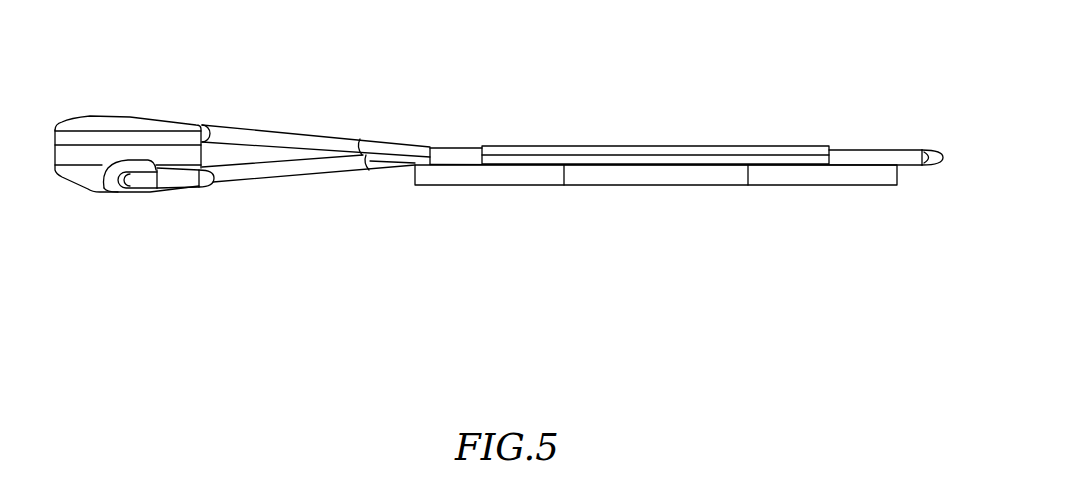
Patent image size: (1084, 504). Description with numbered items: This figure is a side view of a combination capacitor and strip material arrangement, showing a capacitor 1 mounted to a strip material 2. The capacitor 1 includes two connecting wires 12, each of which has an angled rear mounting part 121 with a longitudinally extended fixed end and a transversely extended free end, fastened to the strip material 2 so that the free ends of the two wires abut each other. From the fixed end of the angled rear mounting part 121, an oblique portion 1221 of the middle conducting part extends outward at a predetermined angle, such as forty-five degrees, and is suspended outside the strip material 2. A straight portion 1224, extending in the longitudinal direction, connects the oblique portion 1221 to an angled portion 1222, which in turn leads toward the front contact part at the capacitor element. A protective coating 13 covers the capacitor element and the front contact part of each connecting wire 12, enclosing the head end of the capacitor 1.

The capacitor 1 is at (116, 96).
The connecting wire 12 is at (277, 112).
The protective coating 13 is at (81, 135).
The angled rear mounting part 121 is at (867, 160).
The oblique portion 1221 is at (275, 168).
The angled portion 1222 is at (133, 186).
The straight portion 1224 is at (177, 180).
The strip material 2 is at (628, 175).